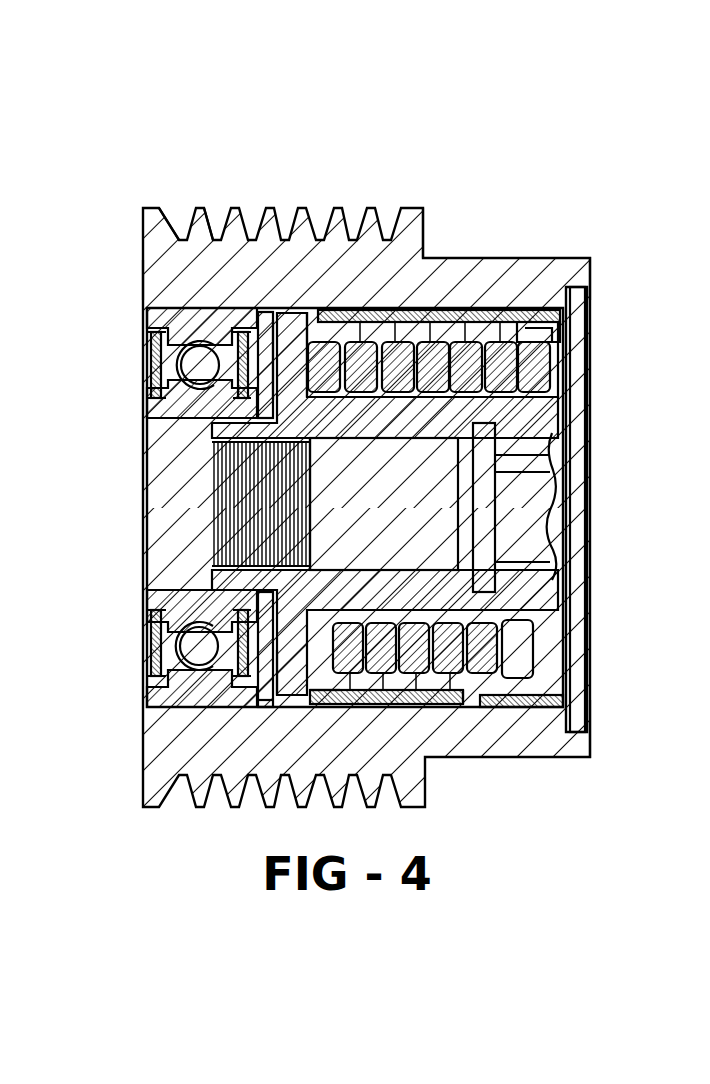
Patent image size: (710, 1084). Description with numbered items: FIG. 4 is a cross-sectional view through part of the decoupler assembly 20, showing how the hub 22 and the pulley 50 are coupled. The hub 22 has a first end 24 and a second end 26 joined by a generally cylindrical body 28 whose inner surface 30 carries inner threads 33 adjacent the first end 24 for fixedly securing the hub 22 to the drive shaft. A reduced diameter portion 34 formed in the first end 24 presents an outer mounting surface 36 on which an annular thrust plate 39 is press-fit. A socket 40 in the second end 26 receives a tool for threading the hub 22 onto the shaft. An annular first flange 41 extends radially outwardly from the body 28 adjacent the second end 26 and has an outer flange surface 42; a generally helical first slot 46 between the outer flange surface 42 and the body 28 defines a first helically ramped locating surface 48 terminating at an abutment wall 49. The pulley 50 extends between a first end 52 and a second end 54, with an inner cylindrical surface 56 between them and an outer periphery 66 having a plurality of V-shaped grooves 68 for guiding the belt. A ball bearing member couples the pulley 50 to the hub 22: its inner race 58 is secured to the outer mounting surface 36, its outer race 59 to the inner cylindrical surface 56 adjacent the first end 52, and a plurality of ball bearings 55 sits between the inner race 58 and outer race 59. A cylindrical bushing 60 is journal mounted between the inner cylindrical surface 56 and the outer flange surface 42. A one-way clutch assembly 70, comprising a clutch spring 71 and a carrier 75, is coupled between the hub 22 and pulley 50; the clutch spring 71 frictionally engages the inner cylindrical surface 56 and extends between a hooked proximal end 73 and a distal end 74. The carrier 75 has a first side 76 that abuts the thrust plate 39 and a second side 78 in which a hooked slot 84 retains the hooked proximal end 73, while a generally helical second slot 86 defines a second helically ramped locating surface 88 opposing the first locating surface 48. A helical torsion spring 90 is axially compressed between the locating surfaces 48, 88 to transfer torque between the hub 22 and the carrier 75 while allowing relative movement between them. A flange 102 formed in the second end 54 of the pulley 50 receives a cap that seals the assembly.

The decoupler assembly 20 is at (450, 195).
The hub 22 is at (378, 440).
The first end 24 is at (215, 440).
The second end 26 is at (560, 402).
The body 28 is at (415, 440).
The inner surface 30 is at (320, 440).
The inner threads 33 is at (215, 512).
The reduced diameter portion 34 is at (212, 577).
The outer mounting surface 36 is at (200, 596).
The thrust plate 39 is at (195, 650).
The socket 40 is at (555, 512).
The first flange 41 is at (562, 342).
The outer flange surface 42 is at (565, 312).
The first slot 46 is at (530, 340).
The first helically ramped locating surface 48 is at (565, 382).
The abutment wall 49 is at (520, 627).
The pulley 50 is at (138, 243).
The first end 52 is at (147, 288).
The second end 54 is at (590, 268).
The ball bearings 55 is at (195, 365).
The inner cylindrical surface 56 is at (150, 322).
The inner race 58 is at (152, 404).
The outer race 59 is at (153, 332).
The bushing 60 is at (490, 322).
The outer periphery 66 is at (160, 208).
The V-shaped grooves 68 is at (210, 215).
The one-way clutch assembly 70 is at (470, 700).
The clutch spring 71 is at (452, 702).
The hooked proximal end 73 is at (295, 706).
The distal end 74 is at (530, 707).
The carrier 75 is at (293, 328).
The first side 76 is at (265, 312).
The second side 78 is at (322, 325).
The hooked slot 84 is at (273, 708).
The second slot 86 is at (345, 700).
The second helically ramped locating surface 88 is at (352, 582).
The torsion spring 90 is at (388, 695).
The flange 102 is at (592, 742).